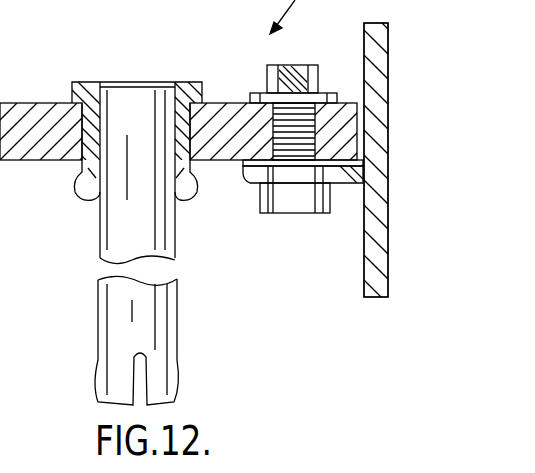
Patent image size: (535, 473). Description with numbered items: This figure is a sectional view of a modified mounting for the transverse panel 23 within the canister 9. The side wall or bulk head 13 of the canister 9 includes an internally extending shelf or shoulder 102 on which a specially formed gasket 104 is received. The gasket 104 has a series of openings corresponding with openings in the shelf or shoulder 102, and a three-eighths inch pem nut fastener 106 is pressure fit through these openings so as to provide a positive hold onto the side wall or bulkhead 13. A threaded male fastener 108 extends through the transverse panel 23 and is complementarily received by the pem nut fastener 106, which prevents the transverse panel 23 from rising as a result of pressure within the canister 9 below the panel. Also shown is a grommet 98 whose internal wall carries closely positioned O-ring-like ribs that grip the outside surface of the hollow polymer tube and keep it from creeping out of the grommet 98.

The canister 9 is at (401, 126).
The side wall or bulk head 13 is at (380, 204).
The transverse panel 23 is at (221, 126).
The grommet 98 is at (82, 184).
The shelf or shoulder 102 is at (350, 180).
The gasket 104 is at (262, 181).
The pem nut fastener 106 is at (290, 192).
The threaded male fastener 108 is at (336, 22).